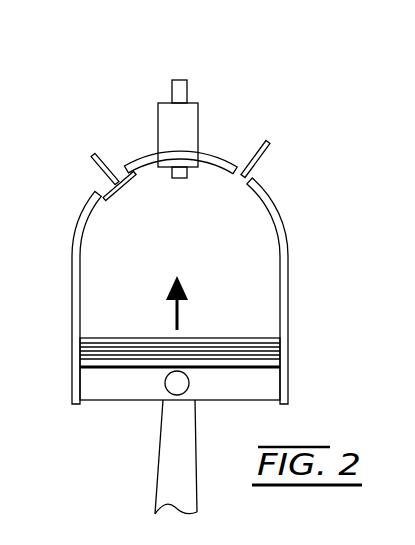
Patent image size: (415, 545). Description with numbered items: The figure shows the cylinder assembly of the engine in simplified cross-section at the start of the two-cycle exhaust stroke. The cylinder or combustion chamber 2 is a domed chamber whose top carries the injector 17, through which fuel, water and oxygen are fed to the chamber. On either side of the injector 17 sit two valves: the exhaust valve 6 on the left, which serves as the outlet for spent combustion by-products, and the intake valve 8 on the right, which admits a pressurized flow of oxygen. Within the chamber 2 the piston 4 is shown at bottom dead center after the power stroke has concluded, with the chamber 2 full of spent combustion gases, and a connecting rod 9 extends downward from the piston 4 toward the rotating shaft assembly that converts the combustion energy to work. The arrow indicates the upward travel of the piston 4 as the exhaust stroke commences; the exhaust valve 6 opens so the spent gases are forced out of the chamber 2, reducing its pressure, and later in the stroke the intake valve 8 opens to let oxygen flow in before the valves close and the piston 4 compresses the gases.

The cylinder 2 is at (188, 242).
The piston 4 is at (271, 385).
The exhaust valve 6 is at (102, 152).
The intake valve 8 is at (261, 142).
The connecting rod 9 is at (163, 443).
The injector 17 is at (193, 113).